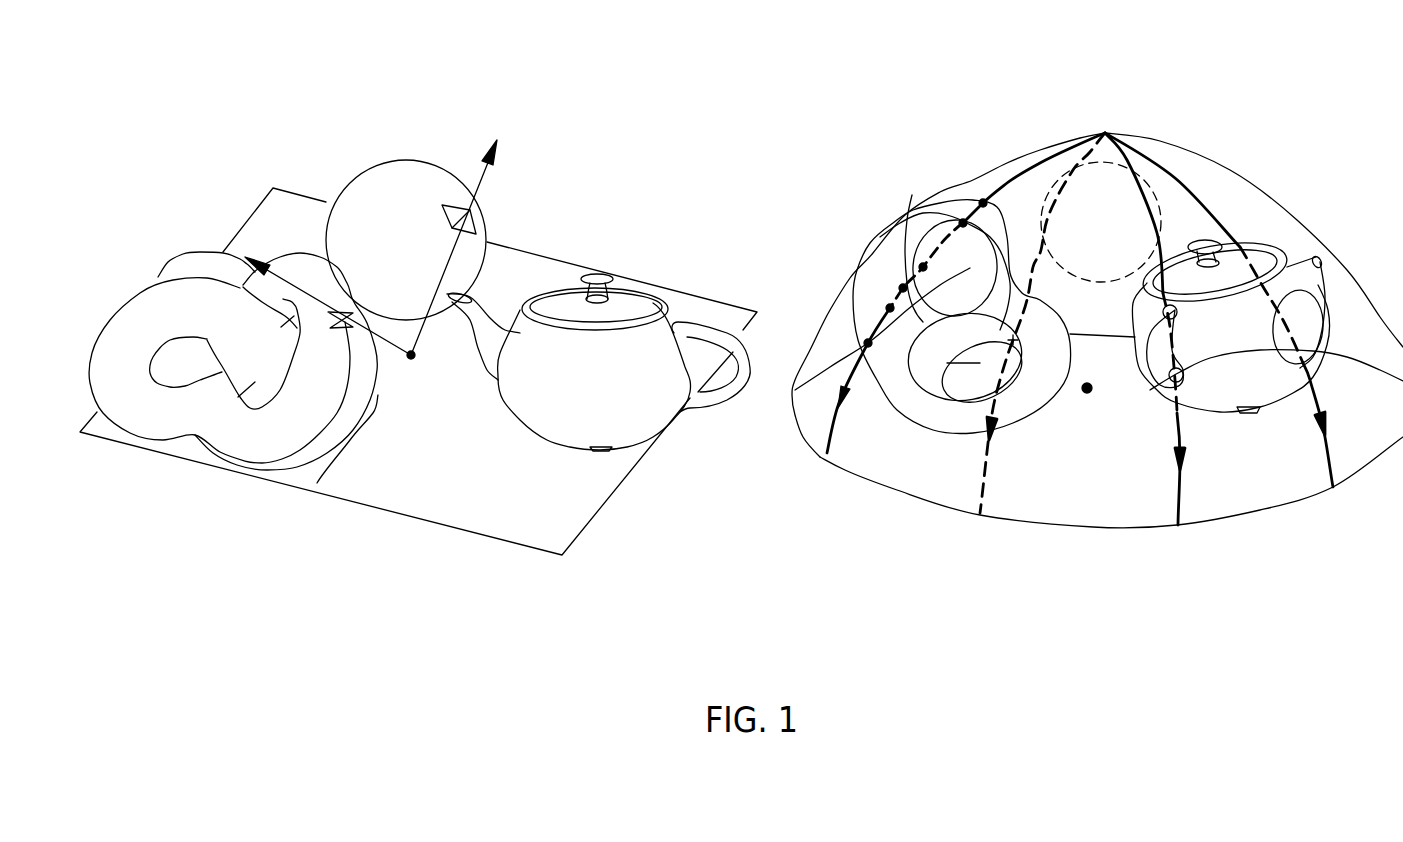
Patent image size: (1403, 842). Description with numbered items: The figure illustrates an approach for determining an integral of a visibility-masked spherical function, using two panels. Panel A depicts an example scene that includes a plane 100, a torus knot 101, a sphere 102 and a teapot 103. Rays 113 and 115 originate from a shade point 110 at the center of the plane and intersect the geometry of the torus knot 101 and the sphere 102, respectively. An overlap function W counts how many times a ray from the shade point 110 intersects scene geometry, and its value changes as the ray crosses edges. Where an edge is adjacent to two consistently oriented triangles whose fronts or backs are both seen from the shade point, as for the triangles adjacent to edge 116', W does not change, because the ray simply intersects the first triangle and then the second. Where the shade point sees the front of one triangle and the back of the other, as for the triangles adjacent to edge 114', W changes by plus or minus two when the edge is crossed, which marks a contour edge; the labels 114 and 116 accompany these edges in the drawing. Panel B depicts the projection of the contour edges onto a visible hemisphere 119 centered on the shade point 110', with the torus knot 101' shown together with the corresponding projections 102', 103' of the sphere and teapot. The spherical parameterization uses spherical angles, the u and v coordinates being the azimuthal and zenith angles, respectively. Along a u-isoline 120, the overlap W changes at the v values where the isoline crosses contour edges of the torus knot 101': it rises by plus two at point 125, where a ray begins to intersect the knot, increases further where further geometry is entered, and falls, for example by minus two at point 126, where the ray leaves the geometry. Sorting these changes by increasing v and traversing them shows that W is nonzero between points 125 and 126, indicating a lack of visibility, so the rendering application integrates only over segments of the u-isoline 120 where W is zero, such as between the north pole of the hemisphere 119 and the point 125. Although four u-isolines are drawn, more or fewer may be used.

The plane 100 is at (710, 317).
The torus knot 101 is at (233, 329).
The sphere 102 is at (406, 206).
The teapot 103 is at (598, 339).
The shade point 110 is at (427, 468).
The ray 113 is at (258, 253).
The first image plane curve 114 is at (313, 226).
The edge 114' is at (331, 473).
The ray 115 is at (505, 152).
The viewing cone / pixel footprint 116 is at (519, 186).
The edge 116' is at (528, 217).
The torus knot 101' is at (962, 267).
The projected sphere object 102' is at (1101, 171).
The projected teapot object 103' is at (1234, 276).
The shade point 110' is at (1108, 340).
The visible hemisphere 119 is at (1210, 157).
The u-isoline 120 is at (1040, 162).
The point 125 is at (921, 213).
The point 126 is at (857, 272).
The panel A is at (347, 619).
The panel B is at (1092, 629).
The u coordinate u is at (953, 530).
The v coordinate v is at (857, 426).